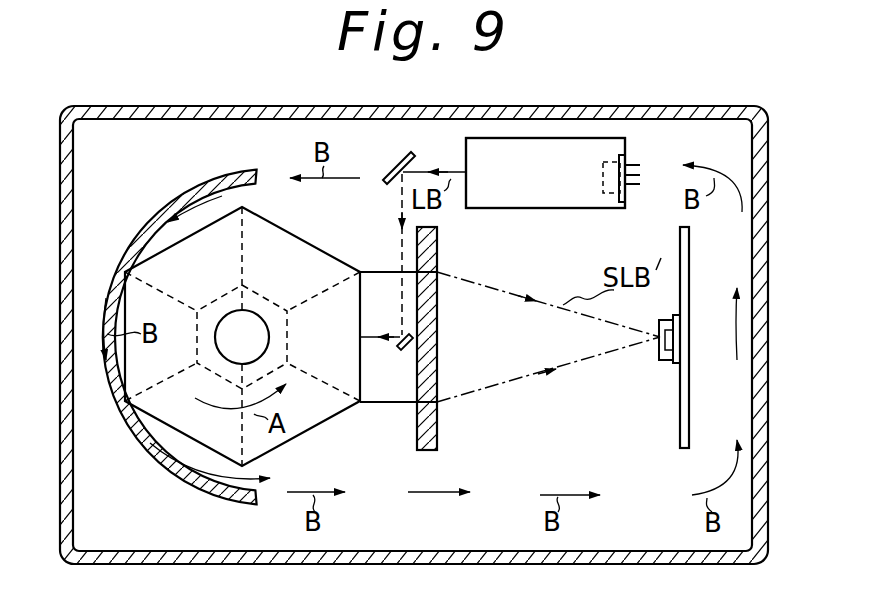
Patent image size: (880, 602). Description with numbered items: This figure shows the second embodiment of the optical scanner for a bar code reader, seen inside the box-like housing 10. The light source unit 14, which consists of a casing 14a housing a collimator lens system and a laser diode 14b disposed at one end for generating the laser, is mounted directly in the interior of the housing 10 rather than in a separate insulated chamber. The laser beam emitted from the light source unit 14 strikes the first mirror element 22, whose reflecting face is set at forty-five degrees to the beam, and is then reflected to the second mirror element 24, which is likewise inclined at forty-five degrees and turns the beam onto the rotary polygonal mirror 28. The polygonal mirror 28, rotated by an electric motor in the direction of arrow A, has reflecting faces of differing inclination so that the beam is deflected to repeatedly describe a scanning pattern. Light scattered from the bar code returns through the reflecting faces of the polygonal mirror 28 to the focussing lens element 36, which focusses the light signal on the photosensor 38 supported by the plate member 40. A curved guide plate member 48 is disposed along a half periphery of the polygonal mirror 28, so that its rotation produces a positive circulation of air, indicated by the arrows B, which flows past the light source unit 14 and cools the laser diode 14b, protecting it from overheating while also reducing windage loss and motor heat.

The housing 10 is at (655, 106).
The curved guide plate member 48 is at (146, 197).
The rotary polygonal mirror 28 is at (318, 246).
The first mirror element 22 is at (390, 172).
The light source unit 14 is at (550, 210).
The casing 14a is at (495, 208).
The laser diode 14b is at (603, 176).
The focussing lens element 36 is at (438, 337).
The second mirror element 24 is at (400, 350).
The photosensor 38 is at (665, 362).
The plate member 40 is at (690, 409).